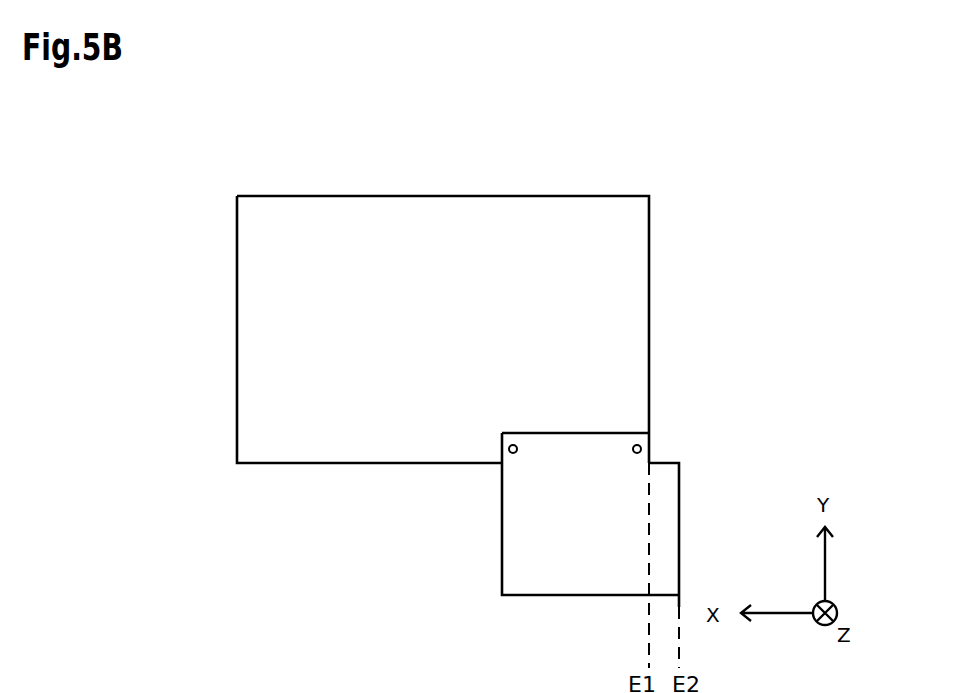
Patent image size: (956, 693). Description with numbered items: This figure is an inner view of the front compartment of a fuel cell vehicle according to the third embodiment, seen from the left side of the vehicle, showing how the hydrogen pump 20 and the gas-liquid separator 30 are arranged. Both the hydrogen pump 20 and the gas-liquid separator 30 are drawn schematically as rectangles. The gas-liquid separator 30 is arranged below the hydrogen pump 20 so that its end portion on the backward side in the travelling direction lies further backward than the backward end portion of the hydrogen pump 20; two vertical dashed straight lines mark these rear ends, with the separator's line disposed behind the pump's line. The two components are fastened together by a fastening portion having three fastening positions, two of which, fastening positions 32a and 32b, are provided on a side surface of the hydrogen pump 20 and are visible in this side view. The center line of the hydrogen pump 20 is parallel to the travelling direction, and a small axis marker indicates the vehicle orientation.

The hydrogen pump 20 is at (640, 182).
The gas-liquid separator 30 is at (693, 477).
The fastening position 32a is at (513, 453).
The fastening position 32b is at (641, 447).